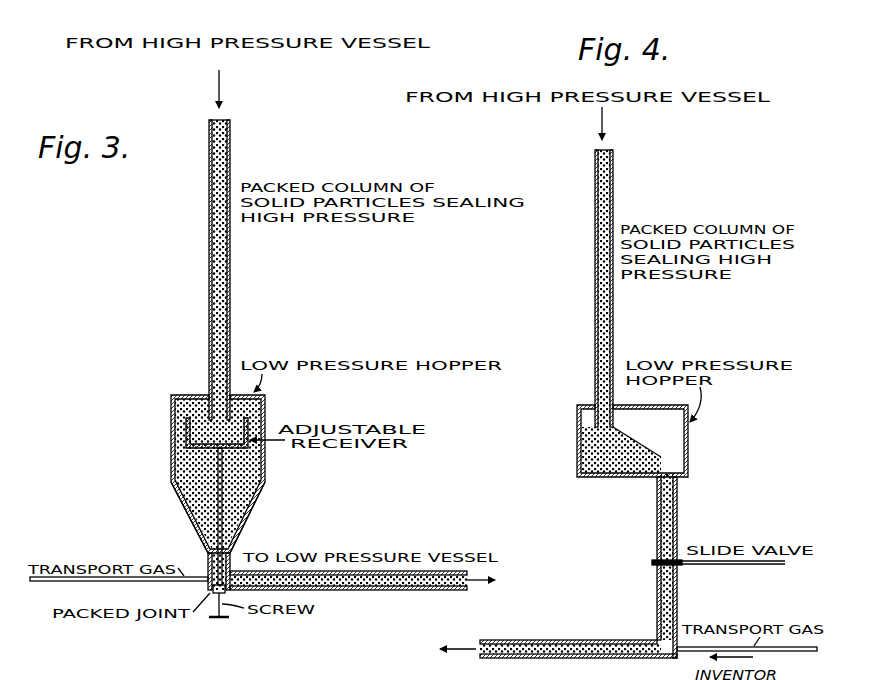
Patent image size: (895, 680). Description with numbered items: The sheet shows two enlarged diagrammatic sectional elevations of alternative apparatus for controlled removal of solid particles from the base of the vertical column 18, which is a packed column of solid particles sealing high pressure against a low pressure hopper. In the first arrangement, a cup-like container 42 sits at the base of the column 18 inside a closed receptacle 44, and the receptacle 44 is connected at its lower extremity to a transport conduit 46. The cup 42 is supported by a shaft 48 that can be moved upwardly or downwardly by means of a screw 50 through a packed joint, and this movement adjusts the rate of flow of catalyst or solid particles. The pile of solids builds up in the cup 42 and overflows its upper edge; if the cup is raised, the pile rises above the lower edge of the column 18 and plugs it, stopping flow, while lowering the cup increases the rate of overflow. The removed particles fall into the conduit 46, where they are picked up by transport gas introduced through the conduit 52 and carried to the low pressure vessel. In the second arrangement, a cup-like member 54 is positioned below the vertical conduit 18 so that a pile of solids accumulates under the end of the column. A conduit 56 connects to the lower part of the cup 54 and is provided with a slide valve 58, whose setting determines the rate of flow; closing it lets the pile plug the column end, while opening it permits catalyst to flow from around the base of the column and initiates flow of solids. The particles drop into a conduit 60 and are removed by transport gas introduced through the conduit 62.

In FIG. 3, the vertical column 18 is at (231, 282).
In FIG. 4, the vertical column 18 is at (594, 300).
In FIG. 3, the cup-like container 42 is at (252, 422).
In FIG. 3, the closed receptacle 44 is at (250, 497).
In FIG. 3, the transport conduit 46 is at (362, 590).
In FIG. 3, the shaft 48 is at (218, 464).
In FIG. 3, the screw 50 is at (210, 598).
In FIG. 3, the transport gas conduit 52 is at (116, 582).
In FIG. 4, the cup-like member 54 is at (578, 458).
In FIG. 4, the conduit 56 is at (657, 504).
In FIG. 4, the slide valve 58 is at (680, 565).
In FIG. 4, the conduit 60 is at (567, 641).
In FIG. 4, the transport gas conduit 62 is at (684, 652).